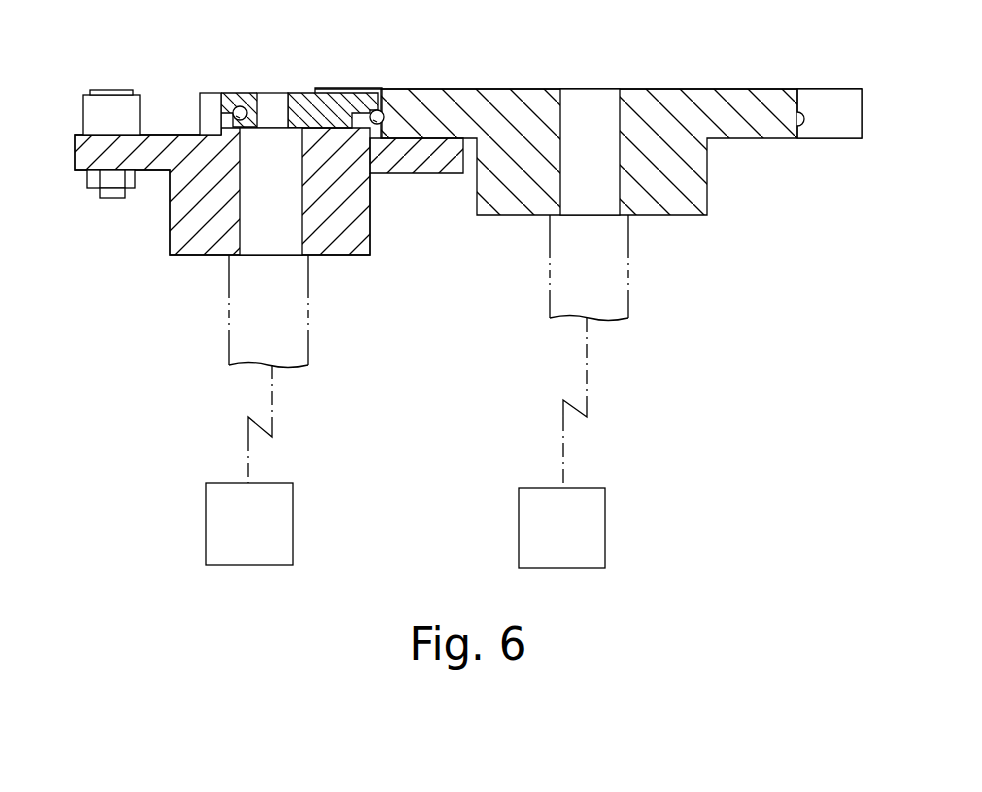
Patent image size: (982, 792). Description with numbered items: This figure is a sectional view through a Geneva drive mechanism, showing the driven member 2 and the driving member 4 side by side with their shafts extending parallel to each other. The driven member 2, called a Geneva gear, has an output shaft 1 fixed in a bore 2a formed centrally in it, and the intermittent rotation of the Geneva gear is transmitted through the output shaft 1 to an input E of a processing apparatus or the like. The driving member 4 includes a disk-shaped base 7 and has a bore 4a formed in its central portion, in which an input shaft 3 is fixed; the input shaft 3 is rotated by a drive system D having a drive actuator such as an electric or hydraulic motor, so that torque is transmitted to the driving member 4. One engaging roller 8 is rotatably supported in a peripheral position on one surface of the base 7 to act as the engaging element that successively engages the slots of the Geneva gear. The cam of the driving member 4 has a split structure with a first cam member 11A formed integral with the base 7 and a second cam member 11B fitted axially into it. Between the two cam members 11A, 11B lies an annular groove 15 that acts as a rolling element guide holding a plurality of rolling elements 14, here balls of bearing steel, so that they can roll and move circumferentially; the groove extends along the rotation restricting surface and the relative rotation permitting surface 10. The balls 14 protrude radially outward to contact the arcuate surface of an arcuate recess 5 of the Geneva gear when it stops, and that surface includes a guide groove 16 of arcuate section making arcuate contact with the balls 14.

The output shaft 1 is at (630, 308).
The driven member 2 is at (684, 89).
The bore 2a is at (593, 103).
The input shaft 3 is at (236, 340).
The driving member 4 is at (168, 223).
The bore 4a is at (273, 143).
The arcuate recess 5 is at (814, 140).
The disk-shaped base 7 is at (441, 163).
The engaging roller 8 is at (105, 103).
The relative rotation permitting surface 10 is at (214, 93).
The first cam member 11A is at (364, 125).
The second cam member 11B is at (368, 101).
The rolling elements 14 is at (240, 105).
The annular groove 15 is at (243, 120).
The guide groove 16 is at (800, 119).
The drive system D is at (221, 530).
The input E is at (598, 540).